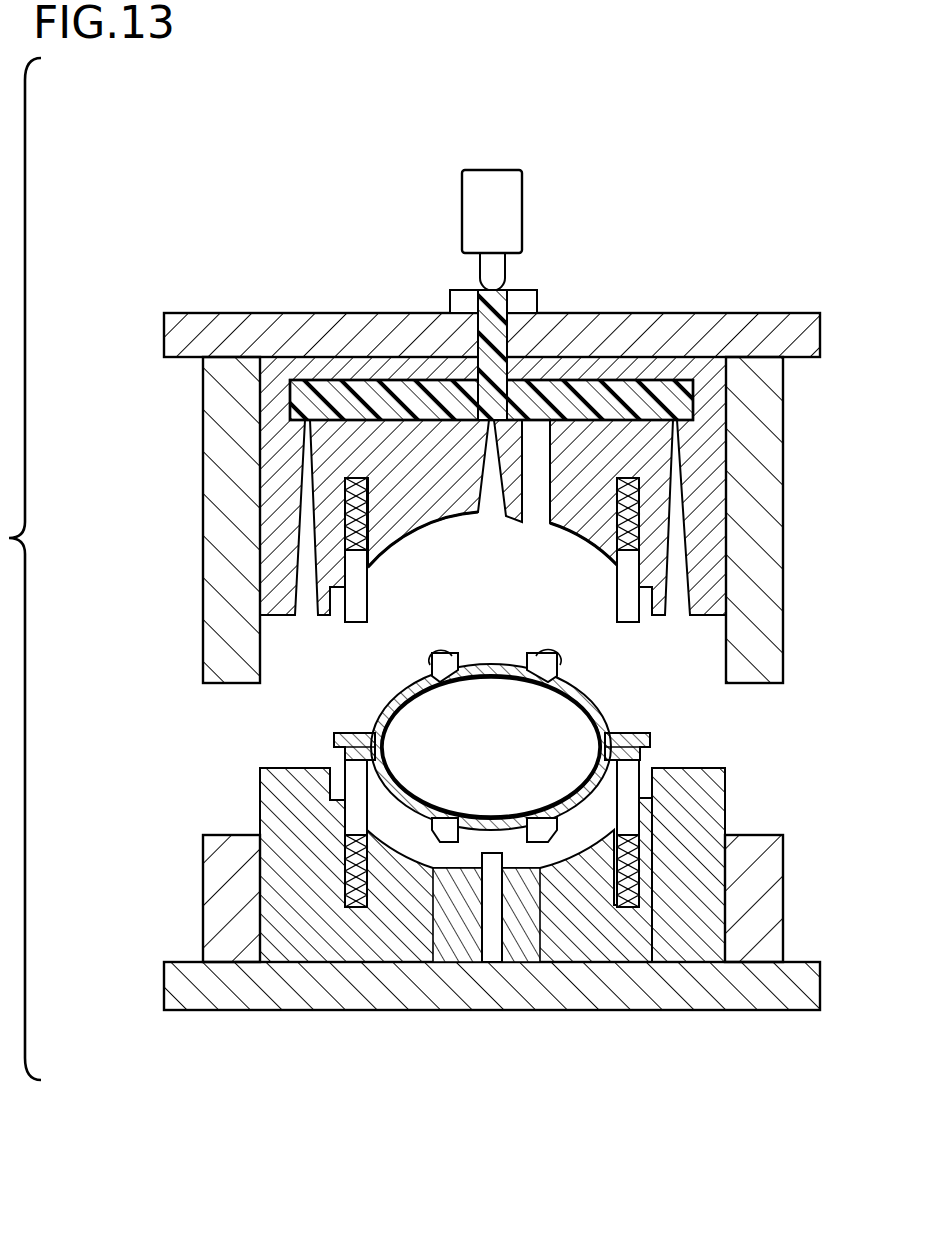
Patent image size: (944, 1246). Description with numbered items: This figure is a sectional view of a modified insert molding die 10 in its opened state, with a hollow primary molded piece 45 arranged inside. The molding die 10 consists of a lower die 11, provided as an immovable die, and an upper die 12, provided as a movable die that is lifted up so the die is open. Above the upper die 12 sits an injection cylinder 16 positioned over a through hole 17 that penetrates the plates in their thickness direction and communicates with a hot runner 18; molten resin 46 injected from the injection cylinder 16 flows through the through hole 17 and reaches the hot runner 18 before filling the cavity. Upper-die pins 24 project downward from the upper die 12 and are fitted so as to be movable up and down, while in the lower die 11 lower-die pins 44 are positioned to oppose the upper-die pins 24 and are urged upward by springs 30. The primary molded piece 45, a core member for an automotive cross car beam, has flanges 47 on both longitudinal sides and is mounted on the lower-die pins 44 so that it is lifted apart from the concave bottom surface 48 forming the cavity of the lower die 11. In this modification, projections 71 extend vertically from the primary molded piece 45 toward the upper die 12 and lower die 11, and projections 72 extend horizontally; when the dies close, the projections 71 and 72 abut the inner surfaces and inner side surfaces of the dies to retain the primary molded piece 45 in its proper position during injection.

The insert molding die 10 is at (162, 741).
The lower die 11 is at (450, 855).
The upper die 12 is at (470, 470).
The injection cylinder 16 is at (498, 185).
The through hole 17 is at (505, 322).
The hot runner 18 is at (350, 398).
The upper-die pins 24 is at (640, 568).
The springs 30 is at (640, 492).
The lower-die pins 44 is at (640, 795).
The primary molded piece 45 is at (491, 812).
The molten resin 46 is at (665, 400).
The flanges 47 is at (627, 733).
The concave bottom surface 48 is at (563, 846).
The projections 71 is at (442, 688).
The projections 72 is at (334, 741).